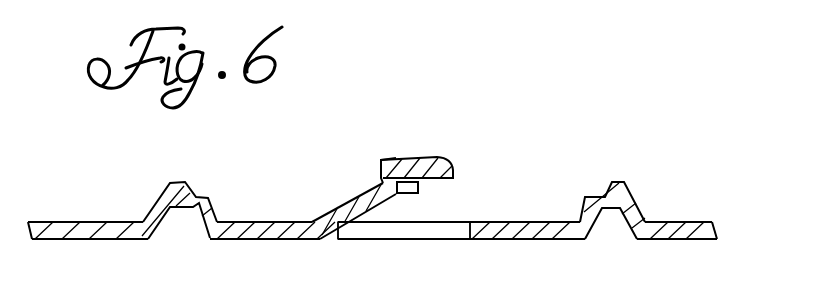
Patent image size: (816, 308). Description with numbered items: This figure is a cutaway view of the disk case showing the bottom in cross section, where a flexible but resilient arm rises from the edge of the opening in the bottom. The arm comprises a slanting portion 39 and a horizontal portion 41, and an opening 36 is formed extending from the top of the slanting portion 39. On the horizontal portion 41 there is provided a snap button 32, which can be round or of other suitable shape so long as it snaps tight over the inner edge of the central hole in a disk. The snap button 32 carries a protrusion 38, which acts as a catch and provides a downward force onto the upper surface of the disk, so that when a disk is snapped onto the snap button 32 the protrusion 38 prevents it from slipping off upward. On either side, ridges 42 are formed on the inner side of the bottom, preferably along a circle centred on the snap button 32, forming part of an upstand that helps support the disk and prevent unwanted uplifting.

The snap button 32 is at (434, 157).
The opening 36 is at (373, 200).
The protrusion 38 is at (381, 160).
The slanting portion 39 is at (323, 217).
The horizontal portion 41 is at (419, 194).
The ridges 42 is at (186, 182).